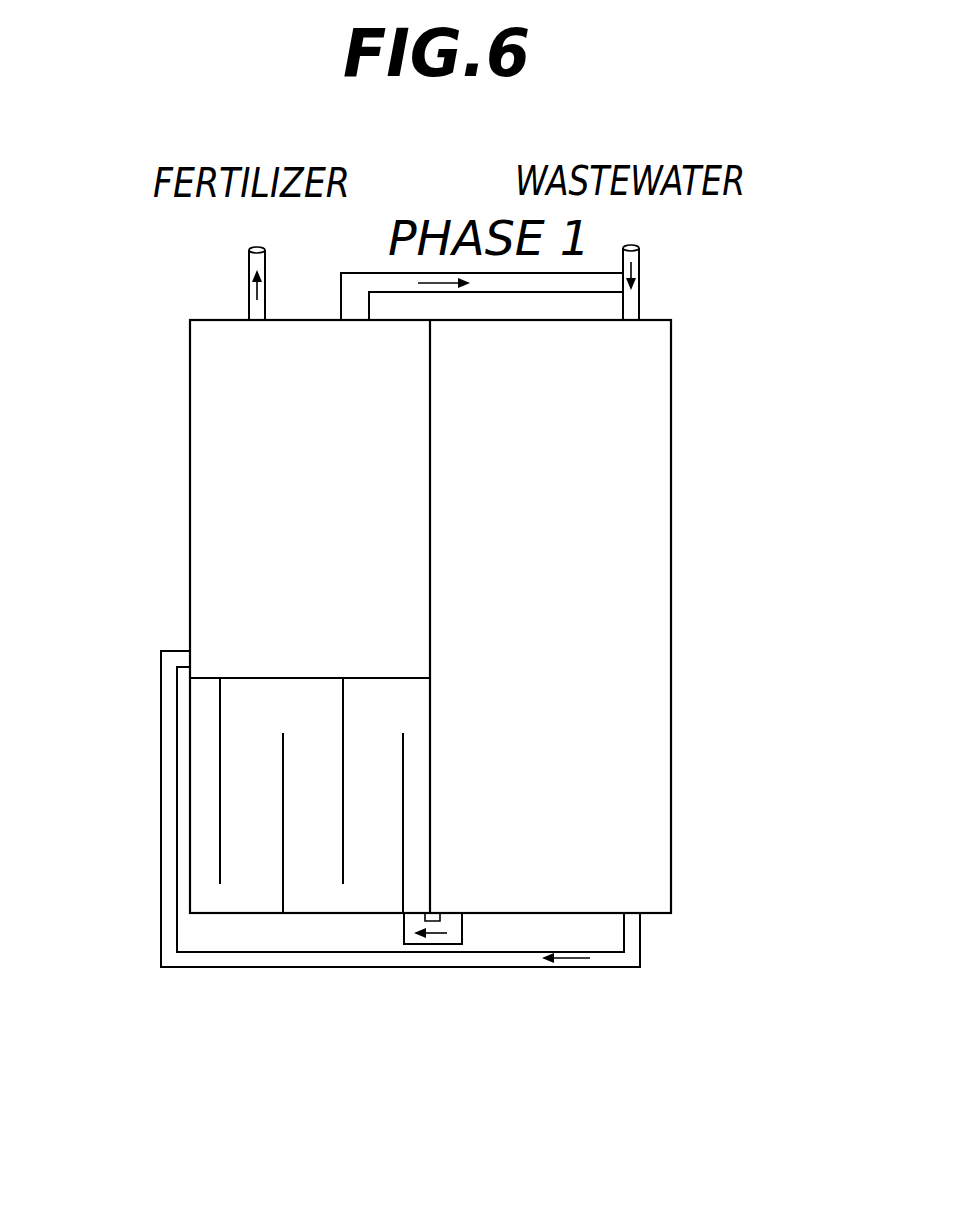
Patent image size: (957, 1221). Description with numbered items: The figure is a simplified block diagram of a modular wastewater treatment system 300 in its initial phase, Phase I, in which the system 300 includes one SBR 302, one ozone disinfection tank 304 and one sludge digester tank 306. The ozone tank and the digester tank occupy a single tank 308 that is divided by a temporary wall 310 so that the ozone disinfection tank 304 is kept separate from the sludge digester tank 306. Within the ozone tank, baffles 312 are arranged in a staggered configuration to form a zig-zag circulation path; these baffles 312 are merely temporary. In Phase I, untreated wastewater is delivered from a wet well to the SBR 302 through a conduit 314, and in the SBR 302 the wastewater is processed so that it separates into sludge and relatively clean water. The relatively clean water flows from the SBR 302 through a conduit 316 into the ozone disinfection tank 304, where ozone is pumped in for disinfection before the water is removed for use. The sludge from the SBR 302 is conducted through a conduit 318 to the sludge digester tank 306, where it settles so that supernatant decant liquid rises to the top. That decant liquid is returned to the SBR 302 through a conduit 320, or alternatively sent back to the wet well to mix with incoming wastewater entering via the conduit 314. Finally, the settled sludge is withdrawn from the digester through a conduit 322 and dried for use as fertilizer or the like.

The modular wastewater treatment system 300 is at (705, 572).
The SBR 302 is at (671, 443).
The ozone disinfection tank 304 is at (241, 913).
The sludge digester tank 306 is at (190, 447).
The single tank 308 is at (155, 578).
The temporary wall 310 is at (297, 677).
The baffles 312 is at (283, 797).
The conduit 314 is at (640, 258).
The conduit 316 is at (462, 925).
The conduit 318 is at (462, 967).
The conduit 320 is at (492, 292).
The conduit 322 is at (249, 265).